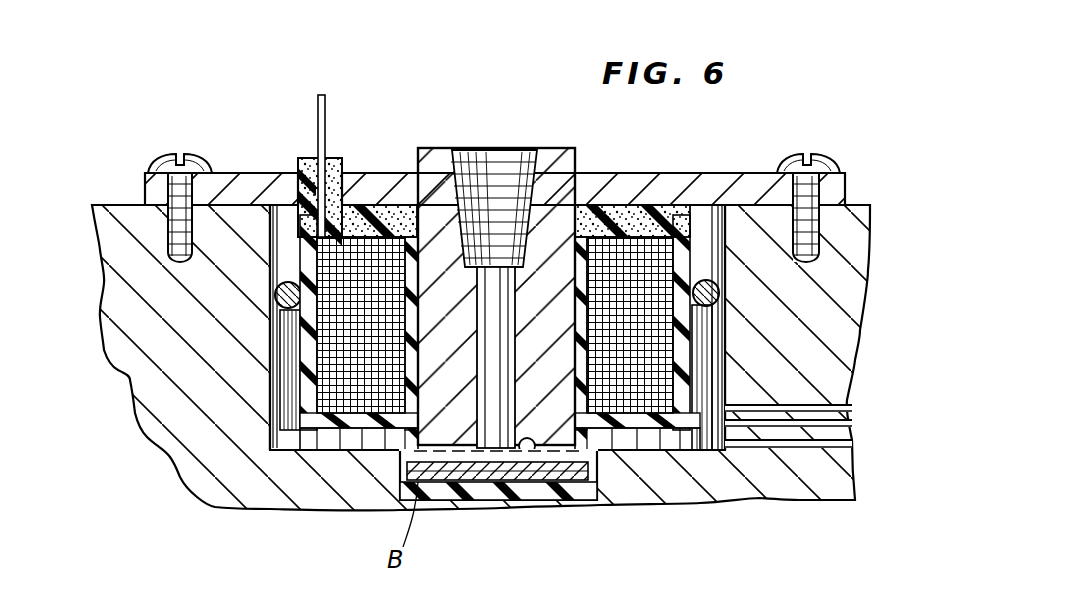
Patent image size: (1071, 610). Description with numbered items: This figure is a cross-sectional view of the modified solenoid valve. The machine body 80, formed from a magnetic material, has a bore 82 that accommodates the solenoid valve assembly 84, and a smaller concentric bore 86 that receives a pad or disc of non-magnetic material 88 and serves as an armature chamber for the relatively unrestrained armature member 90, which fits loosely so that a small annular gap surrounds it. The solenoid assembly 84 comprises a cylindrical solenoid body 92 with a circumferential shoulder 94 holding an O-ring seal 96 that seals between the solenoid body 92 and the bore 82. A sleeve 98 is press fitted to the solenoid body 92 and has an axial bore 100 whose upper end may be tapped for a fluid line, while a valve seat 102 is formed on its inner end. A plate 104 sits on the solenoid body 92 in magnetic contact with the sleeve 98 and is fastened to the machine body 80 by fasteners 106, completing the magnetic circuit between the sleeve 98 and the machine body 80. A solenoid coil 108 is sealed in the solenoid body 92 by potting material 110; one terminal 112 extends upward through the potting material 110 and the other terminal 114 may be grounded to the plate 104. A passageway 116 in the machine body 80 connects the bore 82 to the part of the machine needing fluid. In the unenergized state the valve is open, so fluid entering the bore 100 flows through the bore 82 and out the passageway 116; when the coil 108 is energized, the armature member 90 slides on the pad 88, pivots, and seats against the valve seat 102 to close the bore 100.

The machine body 80 is at (131, 218).
The bore 82 is at (284, 452).
The solenoid valve assembly 84 is at (628, 172).
The concentric bore 86 is at (582, 500).
The disc of non-magnetic material 88 is at (478, 480).
The armature member 90 is at (535, 482).
The solenoid body 92 is at (286, 232).
The circumferential shoulder 94 is at (271, 289).
The O-ring seal 96 is at (276, 300).
The sleeve 98 is at (420, 150).
The axial bore 100 is at (505, 306).
The valve seat 102 is at (530, 438).
The plate 104 is at (752, 172).
The fasteners 106 is at (208, 162).
The solenoid coil 108 is at (366, 204).
The potting material 110 is at (366, 243).
The terminal 112 is at (326, 126).
The terminal 114 is at (684, 232).
The passageway 116 is at (836, 442).